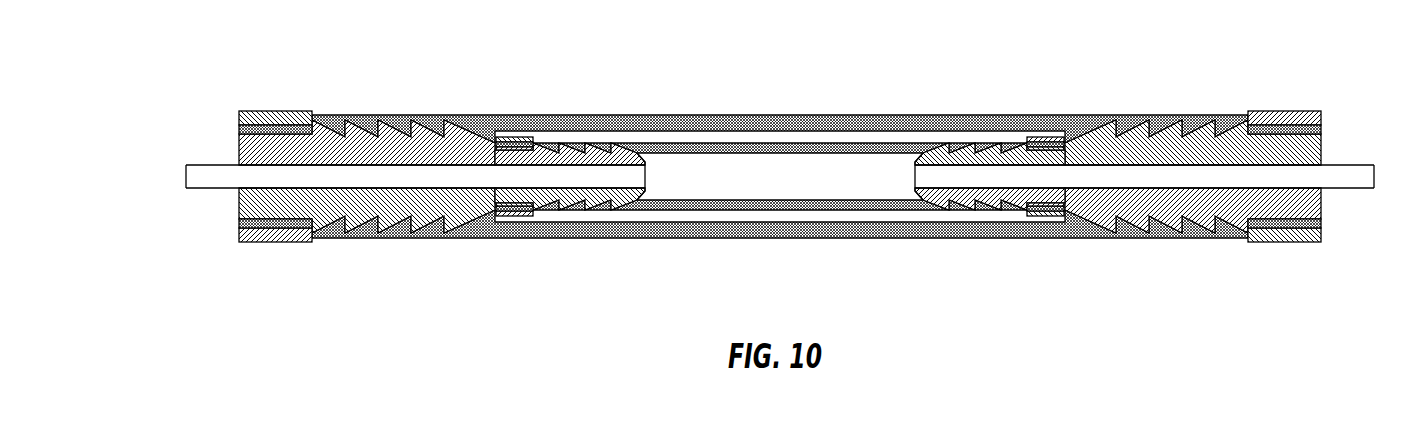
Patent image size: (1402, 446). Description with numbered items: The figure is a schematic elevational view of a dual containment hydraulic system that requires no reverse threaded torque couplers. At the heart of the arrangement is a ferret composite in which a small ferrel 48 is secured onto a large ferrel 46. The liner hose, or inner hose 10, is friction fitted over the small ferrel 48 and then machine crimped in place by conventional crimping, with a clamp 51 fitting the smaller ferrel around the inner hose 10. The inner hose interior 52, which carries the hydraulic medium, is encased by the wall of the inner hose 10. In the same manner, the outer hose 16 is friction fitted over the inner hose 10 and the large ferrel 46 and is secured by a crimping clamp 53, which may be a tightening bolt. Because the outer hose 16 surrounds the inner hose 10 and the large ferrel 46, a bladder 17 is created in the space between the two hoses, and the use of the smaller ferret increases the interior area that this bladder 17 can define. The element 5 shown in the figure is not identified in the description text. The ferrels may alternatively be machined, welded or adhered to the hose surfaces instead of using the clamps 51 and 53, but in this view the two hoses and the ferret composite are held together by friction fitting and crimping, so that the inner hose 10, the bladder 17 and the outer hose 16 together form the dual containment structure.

The rod 5 is at (228, 177).
The inner hose 10 is at (774, 169).
The outer hose 16 is at (517, 125).
The bladder 17 is at (630, 135).
The large ferrel 46 is at (427, 217).
The small ferrel 48 is at (967, 145).
The clamp 51 is at (1043, 137).
The inner hose interior 52 is at (718, 183).
The crimping clamp 53 is at (277, 117).